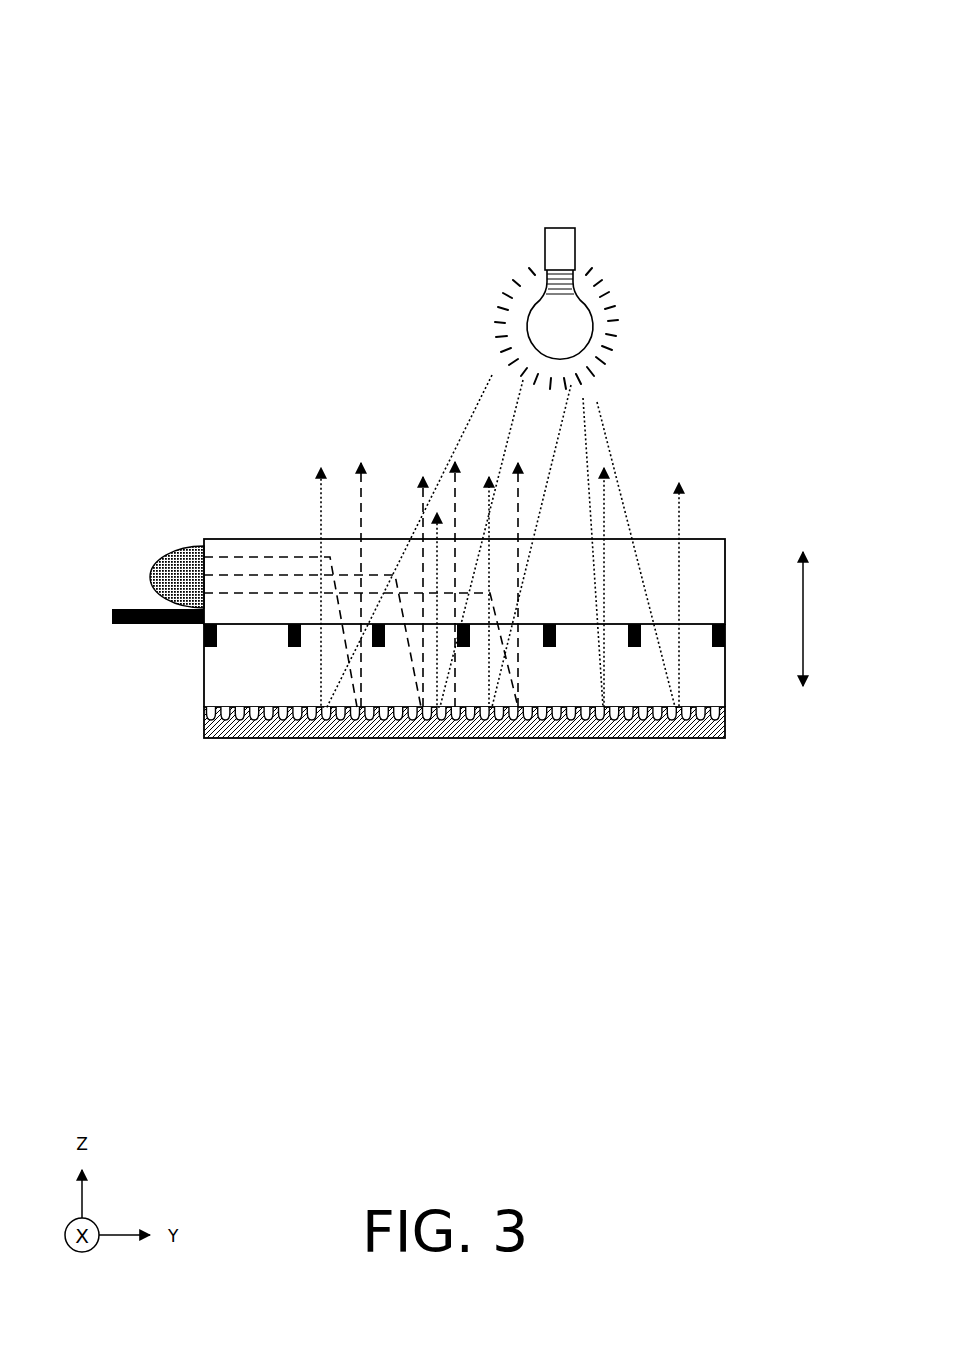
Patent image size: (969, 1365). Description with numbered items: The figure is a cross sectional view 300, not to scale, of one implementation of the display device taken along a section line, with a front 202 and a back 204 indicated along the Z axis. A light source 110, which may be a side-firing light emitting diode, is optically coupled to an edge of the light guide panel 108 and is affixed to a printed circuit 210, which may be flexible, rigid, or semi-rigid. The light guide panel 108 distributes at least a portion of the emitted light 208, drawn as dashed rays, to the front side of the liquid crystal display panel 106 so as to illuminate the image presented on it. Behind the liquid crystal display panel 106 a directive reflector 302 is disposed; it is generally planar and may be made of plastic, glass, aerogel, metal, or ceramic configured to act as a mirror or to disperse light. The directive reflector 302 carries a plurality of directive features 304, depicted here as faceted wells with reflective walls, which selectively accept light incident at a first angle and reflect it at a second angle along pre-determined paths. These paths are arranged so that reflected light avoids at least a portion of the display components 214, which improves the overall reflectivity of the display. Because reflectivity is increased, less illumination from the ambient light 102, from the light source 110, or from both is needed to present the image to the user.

The cross sectional view 300 is at (735, 48).
The ambient light 102 is at (602, 415).
The liquid crystal display panel 106 is at (542, 673).
The light guide panel 108 is at (385, 555).
The light source 110 is at (192, 546).
The front 202 is at (800, 553).
The back 204 is at (800, 691).
The emitted light 208 is at (282, 558).
The printed circuit 210 is at (130, 625).
The display components 214 is at (294, 648).
The directive reflector 302 is at (397, 722).
The directive feature 304 is at (714, 719).